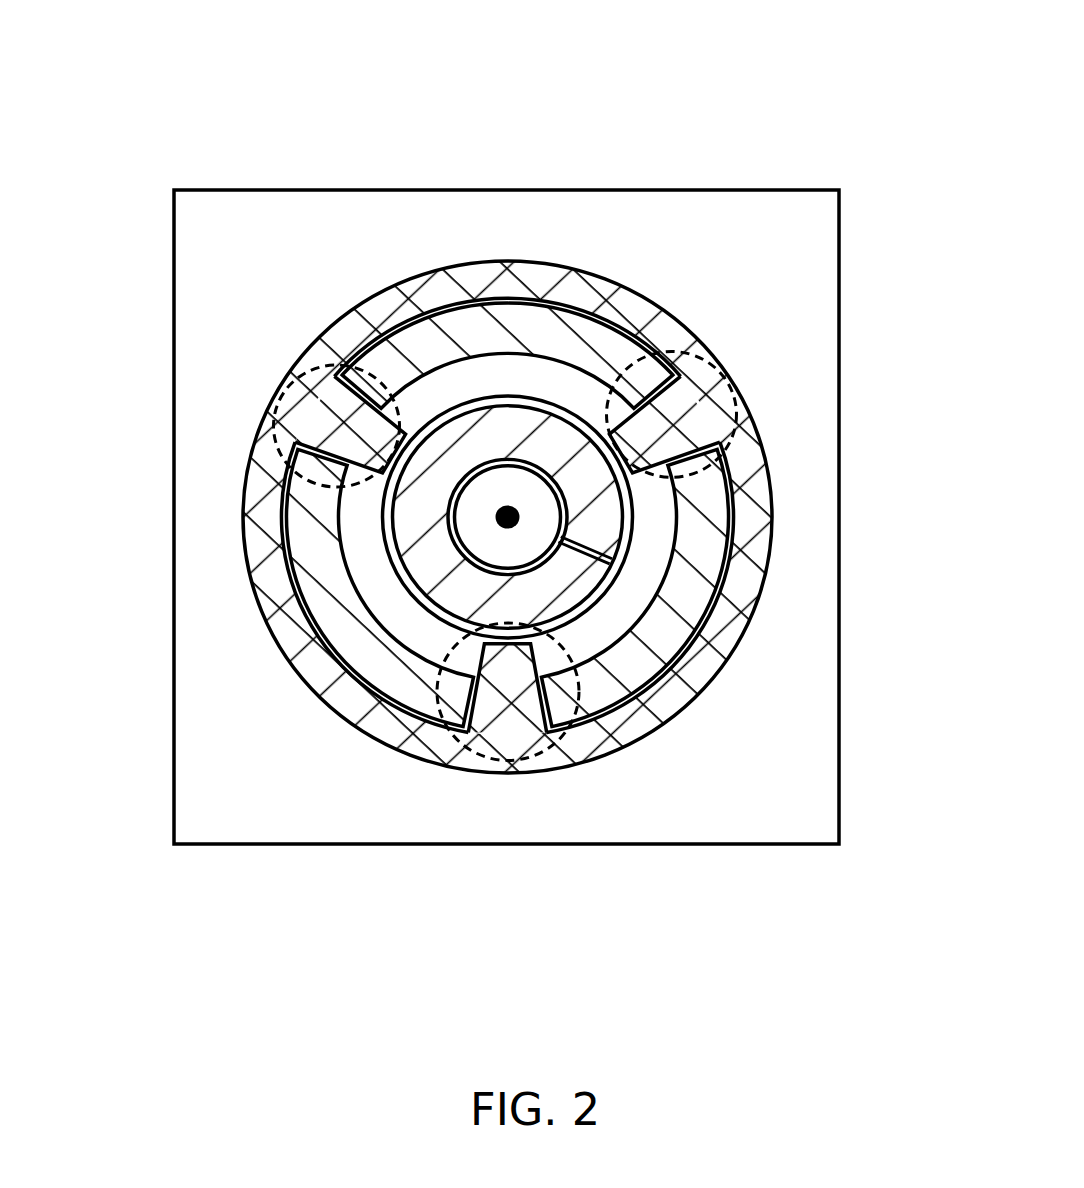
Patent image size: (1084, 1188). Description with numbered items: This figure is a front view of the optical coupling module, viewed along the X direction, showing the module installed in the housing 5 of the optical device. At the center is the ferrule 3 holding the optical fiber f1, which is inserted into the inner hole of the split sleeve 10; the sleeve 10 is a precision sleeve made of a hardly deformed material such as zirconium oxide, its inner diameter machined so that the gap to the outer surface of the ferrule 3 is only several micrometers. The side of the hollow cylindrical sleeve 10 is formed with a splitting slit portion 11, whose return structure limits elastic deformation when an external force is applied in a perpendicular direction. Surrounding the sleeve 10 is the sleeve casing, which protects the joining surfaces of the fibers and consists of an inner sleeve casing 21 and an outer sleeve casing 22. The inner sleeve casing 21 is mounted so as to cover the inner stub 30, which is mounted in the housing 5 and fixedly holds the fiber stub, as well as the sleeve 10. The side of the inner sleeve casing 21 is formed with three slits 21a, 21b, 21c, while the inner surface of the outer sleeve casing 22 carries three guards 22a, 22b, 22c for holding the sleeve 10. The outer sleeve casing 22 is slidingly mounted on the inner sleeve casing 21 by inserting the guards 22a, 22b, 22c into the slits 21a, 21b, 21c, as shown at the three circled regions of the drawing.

The ferrule 3 is at (467, 523).
The housing 5 is at (173, 421).
The split sleeve 10 is at (596, 512).
The splitting slit portion 11 is at (597, 558).
The inner sleeve casing 21 is at (325, 622).
The slit 21a is at (678, 360).
The slit 21b is at (533, 758).
The slit 21c is at (333, 378).
The outer sleeve casing 22 is at (716, 637).
The guard 22a is at (685, 428).
The guard 22b is at (490, 705).
The guard 22c is at (320, 427).
The inner stub 30 is at (553, 410).
The optical fiber f1 is at (493, 508).